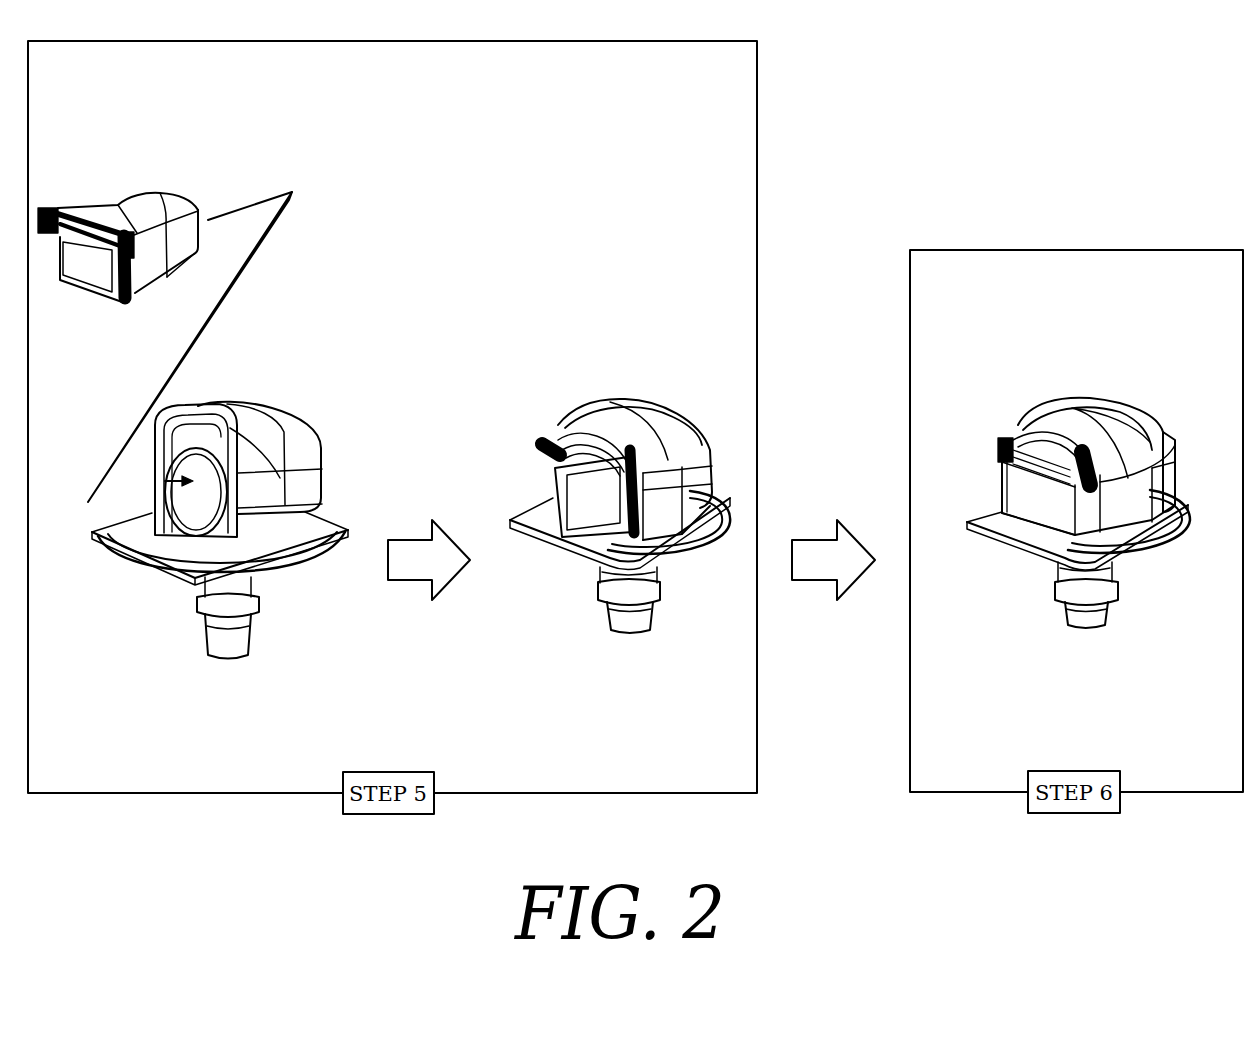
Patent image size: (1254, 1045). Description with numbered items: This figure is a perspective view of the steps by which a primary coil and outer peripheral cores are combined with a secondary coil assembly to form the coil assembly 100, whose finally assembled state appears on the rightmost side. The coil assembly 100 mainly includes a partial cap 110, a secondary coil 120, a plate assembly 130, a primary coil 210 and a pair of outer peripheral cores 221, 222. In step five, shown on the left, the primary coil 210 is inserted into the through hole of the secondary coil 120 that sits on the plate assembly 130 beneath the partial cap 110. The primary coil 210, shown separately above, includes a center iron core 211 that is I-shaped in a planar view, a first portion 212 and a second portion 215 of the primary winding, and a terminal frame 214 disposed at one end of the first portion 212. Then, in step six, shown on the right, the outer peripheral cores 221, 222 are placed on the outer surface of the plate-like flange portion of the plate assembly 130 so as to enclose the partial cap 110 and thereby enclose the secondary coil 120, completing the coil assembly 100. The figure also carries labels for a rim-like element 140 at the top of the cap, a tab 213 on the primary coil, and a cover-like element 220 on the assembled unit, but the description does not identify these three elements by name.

The coil assembly 100 is at (1105, 675).
The partial cap 110 is at (294, 426).
The secondary coil 120 is at (218, 486).
The plate assembly 130 is at (146, 572).
The rim 140 is at (190, 416).
The primary coil 210 is at (153, 134).
The center iron core 211 is at (183, 197).
The first portion of primary winding 212 is at (110, 205).
The tab 213 is at (44, 207).
The terminal frame 214 is at (90, 302).
The second portion of primary winding 215 is at (184, 262).
The cover 220 is at (1178, 448).
The outer peripheral core 221 is at (1180, 495).
The outer peripheral core 222 is at (1000, 505).